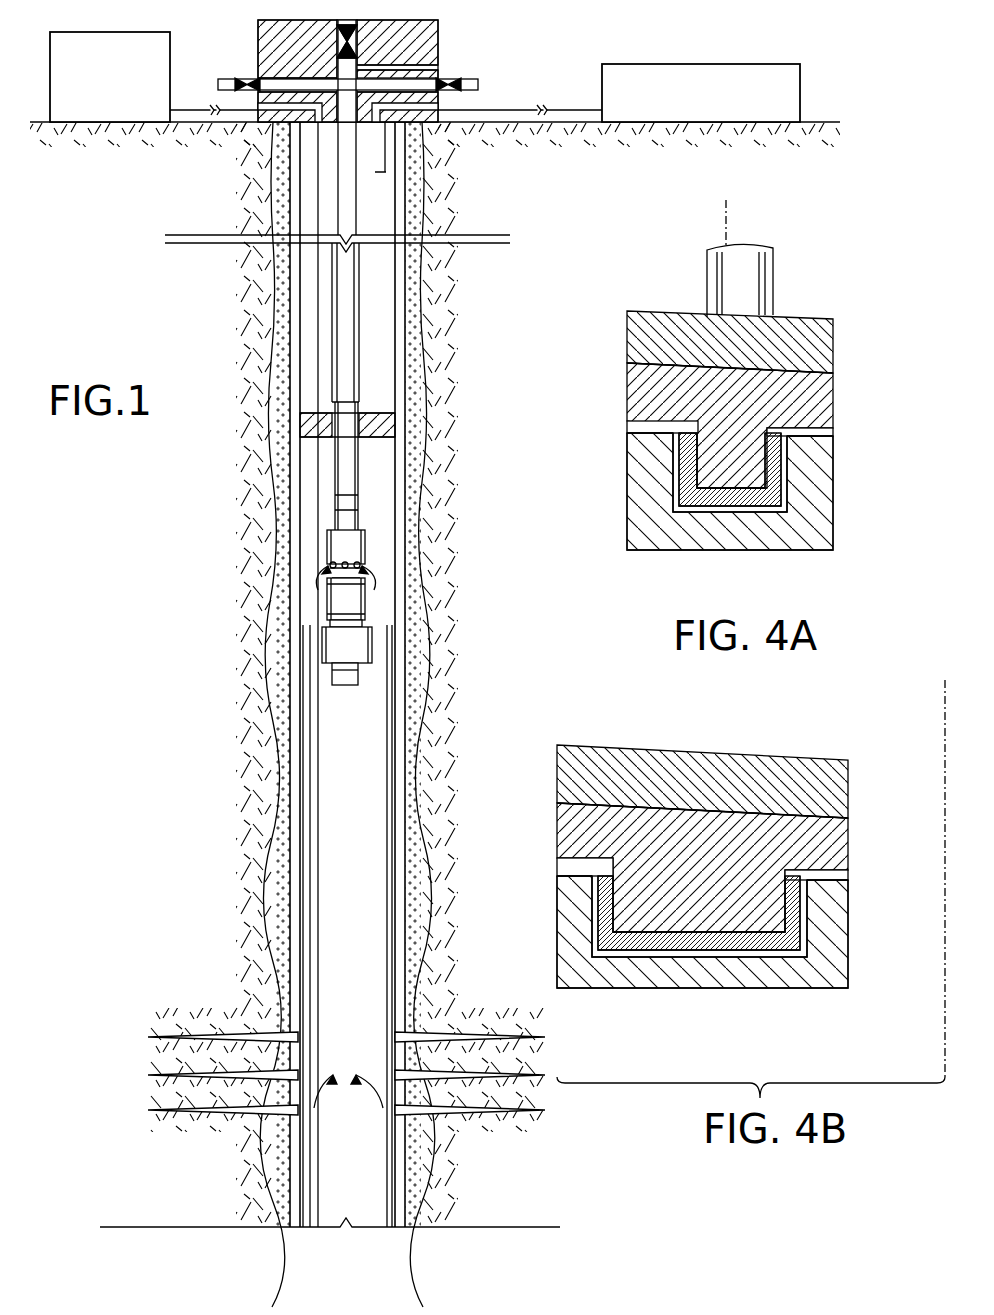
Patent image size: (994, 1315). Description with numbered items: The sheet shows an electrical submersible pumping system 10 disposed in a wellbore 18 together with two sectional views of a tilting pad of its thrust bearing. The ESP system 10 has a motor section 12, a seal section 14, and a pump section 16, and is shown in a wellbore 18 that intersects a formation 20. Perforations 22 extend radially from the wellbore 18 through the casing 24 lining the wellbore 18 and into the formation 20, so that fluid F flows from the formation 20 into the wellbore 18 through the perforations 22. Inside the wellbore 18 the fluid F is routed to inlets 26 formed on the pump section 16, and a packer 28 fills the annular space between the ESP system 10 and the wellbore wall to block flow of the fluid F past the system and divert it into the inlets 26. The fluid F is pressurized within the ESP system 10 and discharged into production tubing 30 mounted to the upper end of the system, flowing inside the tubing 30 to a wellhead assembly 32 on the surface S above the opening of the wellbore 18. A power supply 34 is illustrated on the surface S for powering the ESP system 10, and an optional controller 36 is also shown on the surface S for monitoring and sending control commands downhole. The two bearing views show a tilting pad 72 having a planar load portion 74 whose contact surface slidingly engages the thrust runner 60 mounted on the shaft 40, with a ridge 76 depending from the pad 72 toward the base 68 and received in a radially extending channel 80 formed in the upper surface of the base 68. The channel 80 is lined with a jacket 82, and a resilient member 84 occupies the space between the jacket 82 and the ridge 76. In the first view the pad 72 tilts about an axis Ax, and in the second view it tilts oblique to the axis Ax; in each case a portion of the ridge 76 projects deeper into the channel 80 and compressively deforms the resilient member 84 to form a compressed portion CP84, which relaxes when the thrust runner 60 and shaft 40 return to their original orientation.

In FIG. 1, the electrical submersible pumping system 10 is at (382, 493).
In FIG. 1, the motor section 12 is at (330, 648).
In FIG. 1, the seal section 14 is at (325, 608).
In FIG. 1, the pump section 16 is at (327, 532).
In FIG. 1, the wellbore 18 is at (272, 312).
In FIG. 1, the formation 20 is at (290, 800).
In FIG. 1, the perforations 22 is at (208, 1005).
In FIG. 1, the casing 24 is at (275, 742).
In FIG. 1, the inlets 26 is at (350, 559).
In FIG. 1, the packer 28 is at (400, 425).
In FIG. 1, the production tubing 30 is at (362, 350).
In FIG. 1, the wellhead assembly 32 is at (450, 55).
In FIG. 1, the power supply 34 is at (171, 52).
In FIG. 1, the controller 36 is at (742, 64).
In FIG. 1, the surface S is at (828, 122).
In FIG. 1, the fluid F is at (320, 585).
In FIG. 4A, the shaft 40 is at (705, 270).
In FIG. 4A, the axis Ax is at (730, 222).
In FIG. 4B, the axis Ax is at (945, 703).
In FIG. 4A, the thrust runner 60 is at (820, 356).
In FIG. 4B, the thrust runner 60 is at (825, 790).
In FIG. 4A, the base 68 is at (815, 510).
In FIG. 4B, the base 68 is at (830, 972).
In FIG. 4A, the tilting pad 72 is at (778, 372).
In FIG. 4B, the tilting pad 72 is at (730, 813).
In FIG. 4A, the load portion 74 is at (825, 408).
In FIG. 4B, the load portion 74 is at (826, 848).
In FIG. 4A, the ridge 76 is at (746, 470).
In FIG. 4B, the ridge 76 is at (716, 905).
In FIG. 4A, the channel 80 is at (688, 516).
In FIG. 4B, the channel 80 is at (652, 958).
In FIG. 4A, the jacket 82 is at (737, 516).
In FIG. 4B, the jacket 82 is at (700, 958).
In FIG. 4A, the resilient member 84 is at (782, 470).
In FIG. 4B, the resilient member 84 is at (800, 923).
In FIG. 4A, the compressed portion CP84 is at (777, 517).
In FIG. 4B, the compressed portion CP84 is at (761, 965).